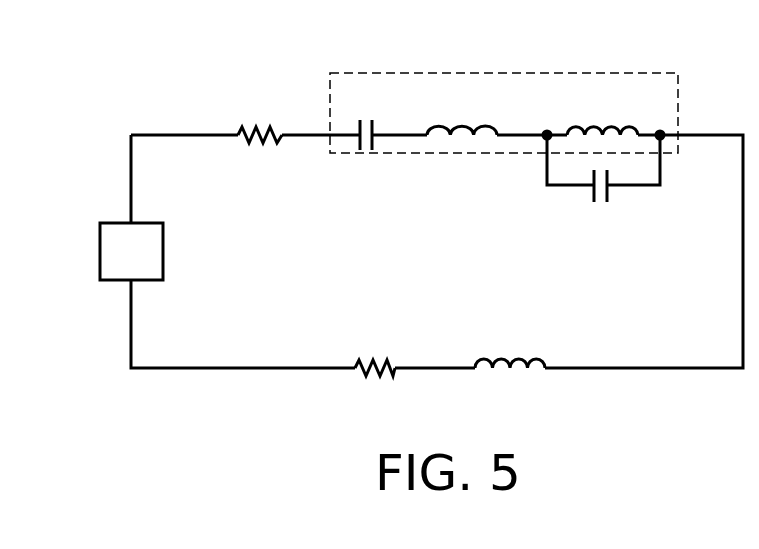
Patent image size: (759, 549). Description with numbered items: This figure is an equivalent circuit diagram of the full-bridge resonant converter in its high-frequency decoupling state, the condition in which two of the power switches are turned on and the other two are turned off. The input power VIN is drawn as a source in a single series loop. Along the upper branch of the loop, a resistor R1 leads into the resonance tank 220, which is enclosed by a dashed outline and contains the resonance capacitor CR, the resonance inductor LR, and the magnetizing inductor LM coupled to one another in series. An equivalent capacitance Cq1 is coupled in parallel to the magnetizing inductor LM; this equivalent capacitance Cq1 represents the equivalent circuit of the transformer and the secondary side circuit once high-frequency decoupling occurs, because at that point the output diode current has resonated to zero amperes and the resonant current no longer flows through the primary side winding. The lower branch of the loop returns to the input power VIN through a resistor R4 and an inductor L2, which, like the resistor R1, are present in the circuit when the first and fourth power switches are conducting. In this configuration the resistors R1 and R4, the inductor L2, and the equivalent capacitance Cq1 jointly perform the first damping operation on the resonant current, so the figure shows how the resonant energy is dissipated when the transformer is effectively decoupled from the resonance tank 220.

The resonance tank 220 is at (517, 73).
The resistor R1 is at (260, 114).
The resonance capacitor CR is at (366, 118).
The resonance inductor LR is at (462, 111).
The magnetizing inductor LM is at (602, 107).
The equivalent capacitance Cq1 is at (603, 185).
The resistor R4 is at (375, 348).
The inductor L2 is at (510, 344).
The input power VIN is at (131, 251).